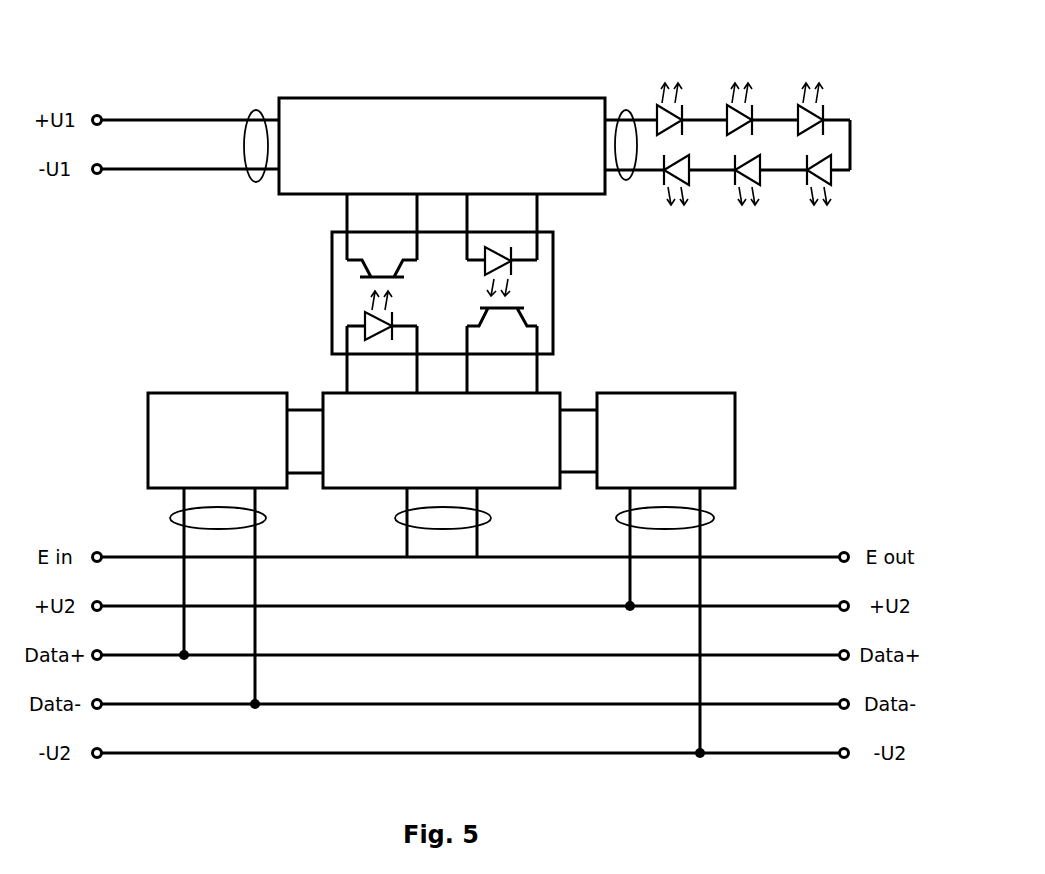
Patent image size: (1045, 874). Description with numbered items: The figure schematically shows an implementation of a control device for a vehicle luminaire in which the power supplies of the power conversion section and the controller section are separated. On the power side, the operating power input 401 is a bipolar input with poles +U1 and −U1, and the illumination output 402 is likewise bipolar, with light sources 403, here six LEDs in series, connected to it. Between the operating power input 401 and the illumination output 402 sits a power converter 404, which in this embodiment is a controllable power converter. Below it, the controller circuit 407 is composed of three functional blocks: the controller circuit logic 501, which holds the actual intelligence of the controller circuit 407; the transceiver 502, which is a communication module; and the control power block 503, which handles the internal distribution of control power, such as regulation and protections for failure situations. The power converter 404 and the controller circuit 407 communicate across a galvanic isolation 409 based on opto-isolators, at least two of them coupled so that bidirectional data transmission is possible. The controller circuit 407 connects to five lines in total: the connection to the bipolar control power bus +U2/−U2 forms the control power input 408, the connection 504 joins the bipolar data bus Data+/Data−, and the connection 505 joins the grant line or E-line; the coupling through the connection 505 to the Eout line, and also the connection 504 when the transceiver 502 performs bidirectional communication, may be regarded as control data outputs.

The operating power input 401 is at (258, 110).
The illumination output 402 is at (628, 110).
The light sources 403 is at (653, 78).
The power converter 404 is at (476, 97).
The controller circuit 407 is at (750, 393).
The control power input 408 is at (714, 518).
The galvanic isolation 409 is at (553, 316).
The controller circuit logic 501 is at (507, 488).
The transceiver 502 is at (148, 440).
The control power block 503 is at (735, 441).
The connection to the data bus 504 is at (170, 518).
The connection to the E-line 505 is at (395, 518).